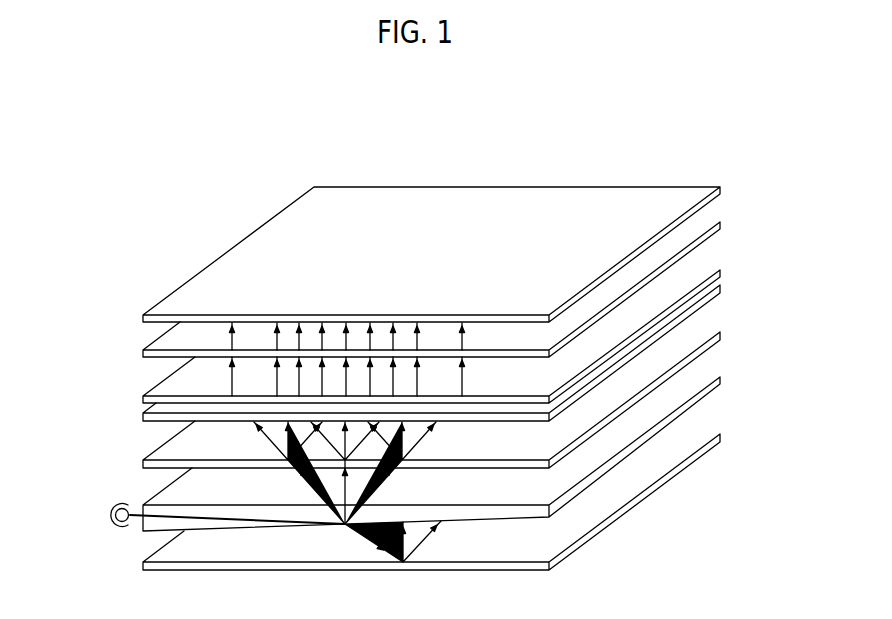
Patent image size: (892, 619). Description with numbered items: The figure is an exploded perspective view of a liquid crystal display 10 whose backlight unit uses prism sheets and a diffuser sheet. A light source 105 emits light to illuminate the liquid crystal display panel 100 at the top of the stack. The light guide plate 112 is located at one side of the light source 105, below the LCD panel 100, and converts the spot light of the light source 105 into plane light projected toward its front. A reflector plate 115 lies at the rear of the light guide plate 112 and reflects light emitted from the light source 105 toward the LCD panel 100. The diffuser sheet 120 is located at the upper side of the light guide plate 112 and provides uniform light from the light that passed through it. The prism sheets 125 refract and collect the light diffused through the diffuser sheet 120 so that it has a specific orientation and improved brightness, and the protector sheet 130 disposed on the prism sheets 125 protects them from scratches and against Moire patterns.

The liquid crystal display 10 is at (767, 156).
The liquid crystal display panel 100 is at (505, 203).
The protector sheet 130 is at (722, 222).
The prism sheets 125 is at (722, 285).
The diffuser sheet 120 is at (722, 332).
The light guide plate 112 is at (722, 379).
The reflector plate 115 is at (722, 436).
The light source 105 is at (107, 510).